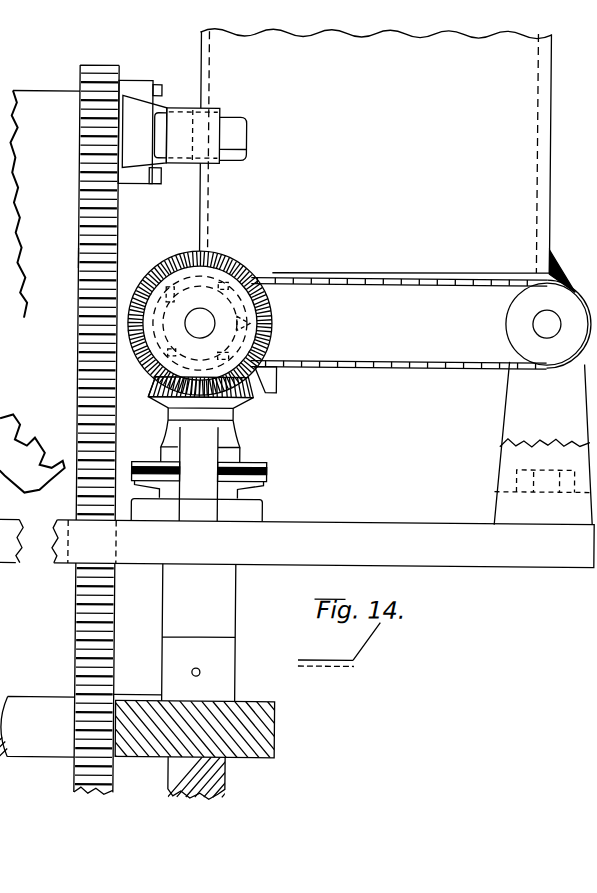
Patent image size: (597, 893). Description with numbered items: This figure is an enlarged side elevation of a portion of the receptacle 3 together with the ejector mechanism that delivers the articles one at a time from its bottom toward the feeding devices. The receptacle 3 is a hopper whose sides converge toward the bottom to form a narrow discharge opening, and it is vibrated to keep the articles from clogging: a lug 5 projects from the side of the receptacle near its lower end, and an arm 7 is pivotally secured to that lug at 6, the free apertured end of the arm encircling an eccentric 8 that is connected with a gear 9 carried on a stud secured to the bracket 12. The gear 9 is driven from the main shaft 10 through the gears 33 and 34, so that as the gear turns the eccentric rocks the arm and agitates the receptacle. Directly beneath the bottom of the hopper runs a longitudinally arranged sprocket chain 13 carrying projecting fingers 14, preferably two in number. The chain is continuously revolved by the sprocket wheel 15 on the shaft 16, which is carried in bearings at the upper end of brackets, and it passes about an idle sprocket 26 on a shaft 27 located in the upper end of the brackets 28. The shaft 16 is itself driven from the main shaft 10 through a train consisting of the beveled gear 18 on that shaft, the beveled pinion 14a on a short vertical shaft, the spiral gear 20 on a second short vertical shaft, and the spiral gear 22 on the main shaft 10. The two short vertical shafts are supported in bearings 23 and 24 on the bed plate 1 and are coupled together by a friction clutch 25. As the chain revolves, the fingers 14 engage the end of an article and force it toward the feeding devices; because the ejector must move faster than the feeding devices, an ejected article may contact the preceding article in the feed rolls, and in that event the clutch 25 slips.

The bed 1 is at (430, 535).
The receptacle 3 is at (549, 85).
The lug 5 is at (213, 117).
The pivot 6 is at (155, 128).
The arm 7 is at (151, 160).
The eccentric 8 is at (143, 88).
The gear 9 is at (106, 69).
The main shaft 10 is at (40, 710).
The bracket 12 is at (44, 100).
The sprocket chain 13 is at (379, 369).
The fingers 14 is at (560, 272).
The beveled pinion 14a is at (247, 395).
The sprocket wheel 15 is at (228, 318).
The shaft 16 is at (205, 326).
The beveled gear 18 is at (240, 272).
The spiral gear 20 is at (263, 705).
The spiral gear 22 is at (226, 779).
The bearing 23 is at (167, 428).
The bearing 24 is at (255, 512).
The friction clutch 25 is at (268, 470).
The idle sprocket 26 is at (568, 302).
The shaft 27 is at (535, 323).
The brackets 28 is at (516, 392).
The gear 33 is at (80, 259).
The gear 34 is at (30, 445).